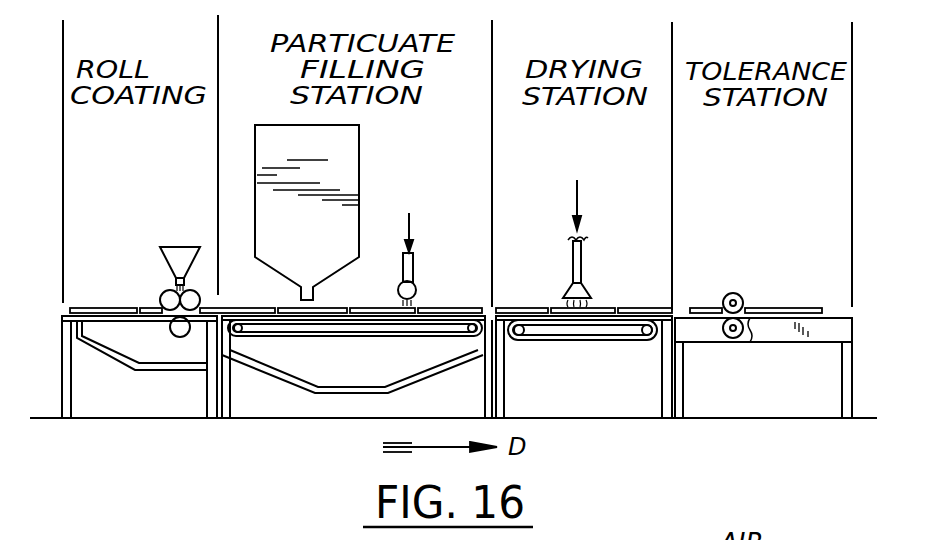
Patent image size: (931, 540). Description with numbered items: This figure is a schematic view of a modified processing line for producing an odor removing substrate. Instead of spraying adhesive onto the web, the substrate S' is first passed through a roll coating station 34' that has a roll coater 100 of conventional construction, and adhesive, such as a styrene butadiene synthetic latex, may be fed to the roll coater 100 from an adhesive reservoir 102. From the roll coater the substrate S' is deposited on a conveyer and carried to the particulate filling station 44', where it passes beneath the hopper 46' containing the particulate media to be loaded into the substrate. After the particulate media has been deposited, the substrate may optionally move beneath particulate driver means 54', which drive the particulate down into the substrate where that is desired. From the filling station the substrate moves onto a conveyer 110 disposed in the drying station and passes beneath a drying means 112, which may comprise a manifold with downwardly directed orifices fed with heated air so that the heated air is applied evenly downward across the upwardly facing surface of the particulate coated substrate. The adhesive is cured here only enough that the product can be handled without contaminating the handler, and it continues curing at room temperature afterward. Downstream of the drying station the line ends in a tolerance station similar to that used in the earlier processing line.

The roll coating station 34' is at (139, 271).
The particulate filling station 44' is at (357, 270).
The hopper 46' is at (307, 212).
The particulate driver means 54' is at (439, 257).
The roll coater 100 is at (158, 278).
The adhesive reservoir 102 is at (178, 247).
The conveyer 110 is at (562, 342).
The drying means 112 is at (588, 285).
The substrate S' is at (101, 286).